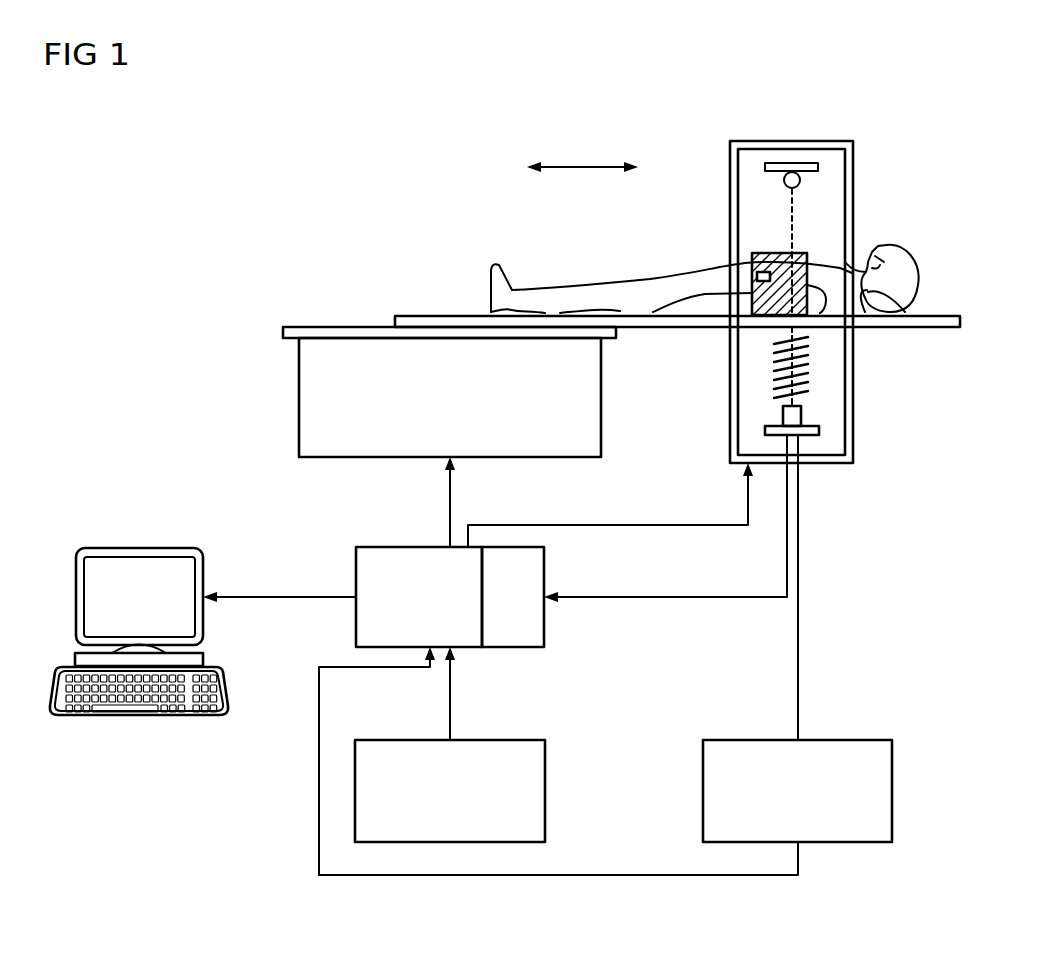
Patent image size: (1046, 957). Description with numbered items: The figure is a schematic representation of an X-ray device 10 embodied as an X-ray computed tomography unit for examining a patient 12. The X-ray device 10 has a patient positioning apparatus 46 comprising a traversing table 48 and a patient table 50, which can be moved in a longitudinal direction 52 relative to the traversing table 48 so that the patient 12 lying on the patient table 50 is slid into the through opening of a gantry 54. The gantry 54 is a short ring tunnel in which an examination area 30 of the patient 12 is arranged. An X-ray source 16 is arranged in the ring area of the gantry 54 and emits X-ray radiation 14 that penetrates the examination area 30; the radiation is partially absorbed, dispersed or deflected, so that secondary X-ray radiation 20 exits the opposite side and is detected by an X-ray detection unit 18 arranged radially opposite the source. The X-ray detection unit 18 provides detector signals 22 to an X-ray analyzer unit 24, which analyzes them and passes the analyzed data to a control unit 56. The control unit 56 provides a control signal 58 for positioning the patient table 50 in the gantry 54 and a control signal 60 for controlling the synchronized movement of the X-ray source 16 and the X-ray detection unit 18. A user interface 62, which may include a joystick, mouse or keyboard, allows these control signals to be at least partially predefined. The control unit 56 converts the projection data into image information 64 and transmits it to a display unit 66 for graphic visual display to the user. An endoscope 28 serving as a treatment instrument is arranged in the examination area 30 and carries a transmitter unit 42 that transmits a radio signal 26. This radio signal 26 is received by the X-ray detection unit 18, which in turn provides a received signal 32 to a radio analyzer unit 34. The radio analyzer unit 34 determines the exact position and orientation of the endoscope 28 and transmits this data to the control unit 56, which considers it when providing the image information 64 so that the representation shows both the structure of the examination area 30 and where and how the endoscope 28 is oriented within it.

The X-ray device 10 is at (366, 172).
The patient 12 is at (638, 288).
The X-ray radiation 14 is at (793, 218).
The X-ray source 16 is at (801, 180).
The X-ray detection unit 18 is at (801, 412).
The secondary X-ray radiation 20 is at (800, 350).
The detector signals 22 is at (667, 598).
The X-ray analyzer unit 24 is at (529, 614).
The radio signal 26 is at (775, 366).
The endoscope 28 is at (757, 275).
The examination area 30 is at (765, 253).
The received signal 32 is at (798, 672).
The radio analyzer unit 34 is at (814, 811).
The transmitter unit 42 is at (752, 262).
The patient positioning apparatus 46 is at (308, 318).
The traversing table 48 is at (466, 417).
The patient table 50 is at (640, 329).
The longitudinal direction 52 is at (583, 164).
The gantry 54 is at (792, 141).
The control unit 56 is at (434, 614).
The control signal 58 is at (450, 511).
The control signal 60 is at (664, 525).
The user interface 62 is at (465, 811).
The image information 64 is at (155, 614).
The display unit 66 is at (136, 548).